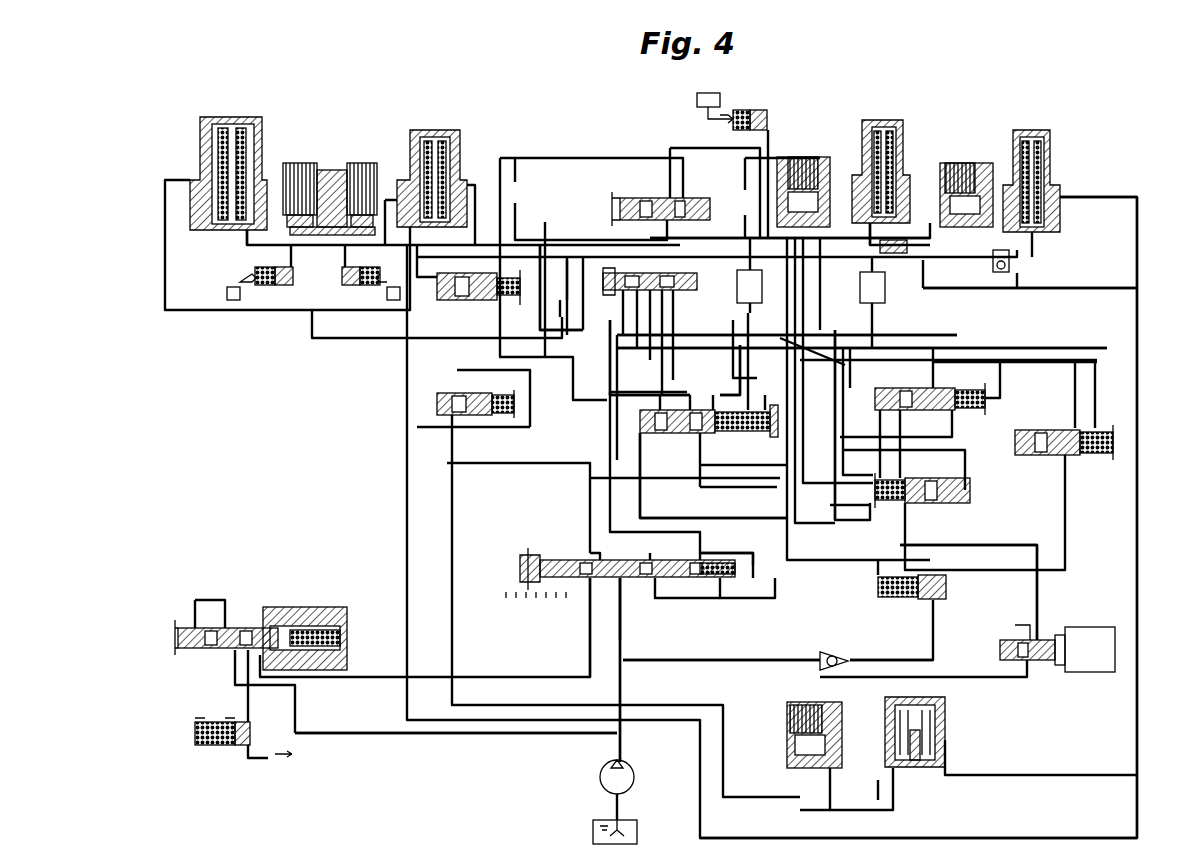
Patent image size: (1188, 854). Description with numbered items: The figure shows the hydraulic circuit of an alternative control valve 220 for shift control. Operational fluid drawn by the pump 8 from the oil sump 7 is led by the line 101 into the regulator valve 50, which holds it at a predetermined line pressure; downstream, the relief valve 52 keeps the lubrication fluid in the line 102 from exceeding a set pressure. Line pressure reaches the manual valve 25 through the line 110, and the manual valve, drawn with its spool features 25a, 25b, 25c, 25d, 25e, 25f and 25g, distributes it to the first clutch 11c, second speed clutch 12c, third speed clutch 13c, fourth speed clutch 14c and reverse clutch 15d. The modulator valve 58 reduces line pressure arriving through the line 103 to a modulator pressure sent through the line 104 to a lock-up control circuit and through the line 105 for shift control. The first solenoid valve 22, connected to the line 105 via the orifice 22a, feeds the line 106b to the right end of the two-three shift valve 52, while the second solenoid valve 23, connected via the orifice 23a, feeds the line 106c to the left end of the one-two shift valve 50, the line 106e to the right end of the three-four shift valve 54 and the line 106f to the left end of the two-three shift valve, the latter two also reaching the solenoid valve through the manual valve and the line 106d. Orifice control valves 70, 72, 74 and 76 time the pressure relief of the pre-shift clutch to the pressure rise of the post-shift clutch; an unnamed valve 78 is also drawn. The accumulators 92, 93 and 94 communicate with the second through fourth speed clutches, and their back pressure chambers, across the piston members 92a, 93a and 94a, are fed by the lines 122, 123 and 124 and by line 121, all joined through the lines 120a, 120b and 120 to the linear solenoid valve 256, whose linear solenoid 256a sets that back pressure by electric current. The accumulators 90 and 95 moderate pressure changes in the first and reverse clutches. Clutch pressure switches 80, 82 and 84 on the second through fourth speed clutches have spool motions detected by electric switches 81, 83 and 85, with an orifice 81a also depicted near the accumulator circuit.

The control valve 220 is at (270, 414).
The accumulator 92 is at (265, 132).
The piston member 92a is at (233, 233).
The accumulator 94 is at (462, 132).
The piston member 94a is at (410, 238).
The accumulator 93 is at (910, 128).
The piston member 93a is at (878, 226).
The accumulator 90 is at (1062, 148).
The orifice 81a is at (1035, 235).
The fluid line 121 is at (1105, 200).
The fluid line 123 is at (1062, 287).
The second speed clutch 12c is at (300, 163).
The fourth speed clutch 14c is at (362, 163).
The third speed clutch 13c is at (806, 150).
The first clutch 11c is at (962, 163).
The reverse clutch 15d is at (840, 705).
The accumulator 95 is at (948, 718).
The clutch pressure switch 80 is at (292, 274).
The clutch pressure switch 84 is at (352, 286).
The electric switch 81 is at (227, 294).
The electric switch 85 is at (392, 300).
The fluid line 122 is at (260, 312).
The fluid line 124 is at (428, 278).
The electric switch 83 is at (700, 110).
The clutch pressure switch 82 is at (768, 108).
The 3-4 shift valve 54 is at (645, 194).
The 2-3 shift valve 52 is at (615, 300).
The first solenoid valve 22 is at (748, 268).
The orifice 22a is at (845, 350).
The second solenoid valve 23 is at (885, 283).
The orifice 23a is at (878, 330).
The fluid line 106e is at (795, 243).
The fluid line 106f is at (600, 372).
The fluid line 106b is at (650, 390).
The fluid line 106d is at (768, 385).
The fluid line 106c is at (698, 519).
The fluid line 105 is at (828, 544).
The orifice control valve 76 is at (477, 304).
The relay valve 78 is at (502, 418).
The regulator valve 50 is at (745, 432).
The line 102 is at (258, 762).
The line 101 is at (446, 738).
The third orifice control valve 74 is at (992, 398).
The second orifice control valve 72 is at (975, 498).
The first orifice control valve 70 is at (1070, 460).
The fluid line 120 is at (1092, 545).
The fluid line 120a is at (1137, 460).
The fluid line 120b is at (1137, 705).
The modulator valve 58 is at (947, 580).
The line 103 is at (873, 656).
The line 104 is at (730, 622).
The line 110 is at (635, 642).
The linear solenoid valve 256 is at (1052, 630).
The linear solenoid 256a is at (1090, 620).
The pump 8 is at (636, 772).
The oil sump 7 is at (640, 834).
The manual valve 25 is at (568, 548).
The manual valve port 25a is at (596, 557).
The manual valve port 25b is at (698, 553).
The manual valve port 25c is at (752, 553).
The manual valve port 25d is at (588, 605).
The manual valve port 25e is at (622, 600).
The manual valve port 25f is at (662, 590).
The manual valve port 25g is at (728, 596).